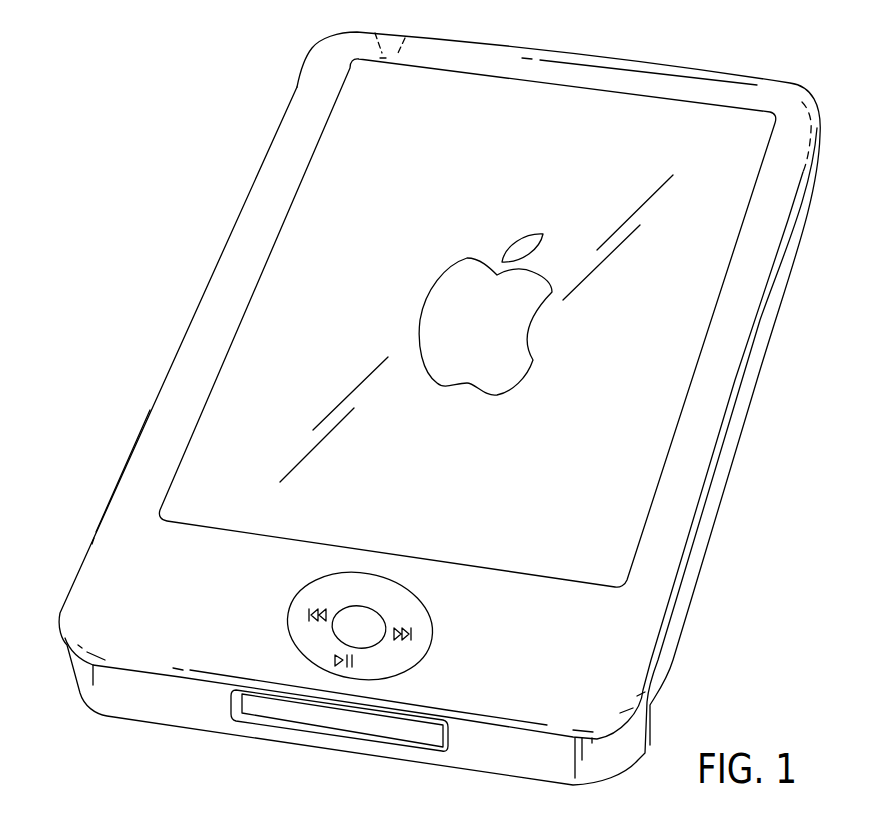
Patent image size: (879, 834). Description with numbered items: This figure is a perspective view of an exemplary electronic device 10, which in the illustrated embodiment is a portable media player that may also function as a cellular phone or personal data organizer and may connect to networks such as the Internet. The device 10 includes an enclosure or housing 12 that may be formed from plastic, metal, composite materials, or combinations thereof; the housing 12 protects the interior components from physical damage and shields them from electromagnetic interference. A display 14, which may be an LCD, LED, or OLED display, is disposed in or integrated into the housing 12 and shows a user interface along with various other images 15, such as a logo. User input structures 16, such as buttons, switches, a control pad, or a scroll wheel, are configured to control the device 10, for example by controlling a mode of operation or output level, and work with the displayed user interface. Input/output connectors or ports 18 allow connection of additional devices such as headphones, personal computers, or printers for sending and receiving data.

The electronic device 10 is at (225, 78).
The enclosure or housing 12 is at (820, 160).
The display 14 is at (663, 107).
The images 15 is at (421, 311).
The user input structures 16 is at (287, 615).
The input/output connectors or ports 18 is at (372, 31).